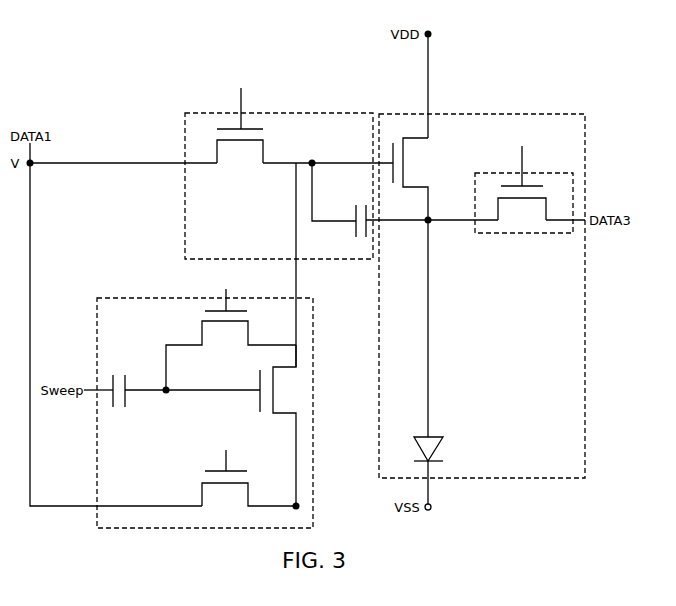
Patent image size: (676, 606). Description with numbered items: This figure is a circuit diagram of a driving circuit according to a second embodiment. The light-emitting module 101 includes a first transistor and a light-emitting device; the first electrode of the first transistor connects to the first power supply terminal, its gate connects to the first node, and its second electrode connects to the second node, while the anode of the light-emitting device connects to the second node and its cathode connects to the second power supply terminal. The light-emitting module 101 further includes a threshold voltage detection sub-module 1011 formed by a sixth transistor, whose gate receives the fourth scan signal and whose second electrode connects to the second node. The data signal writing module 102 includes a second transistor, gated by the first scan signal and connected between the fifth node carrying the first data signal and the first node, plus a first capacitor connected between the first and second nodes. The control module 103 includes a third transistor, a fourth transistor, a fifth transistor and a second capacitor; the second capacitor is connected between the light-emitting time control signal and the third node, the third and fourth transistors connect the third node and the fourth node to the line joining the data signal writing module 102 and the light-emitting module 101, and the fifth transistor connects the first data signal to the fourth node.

The light-emitting module 101 is at (500, 277).
The threshold voltage detection sub-module 1011 is at (563, 172).
The data signal writing module 102 is at (288, 113).
The control module 103 is at (313, 457).